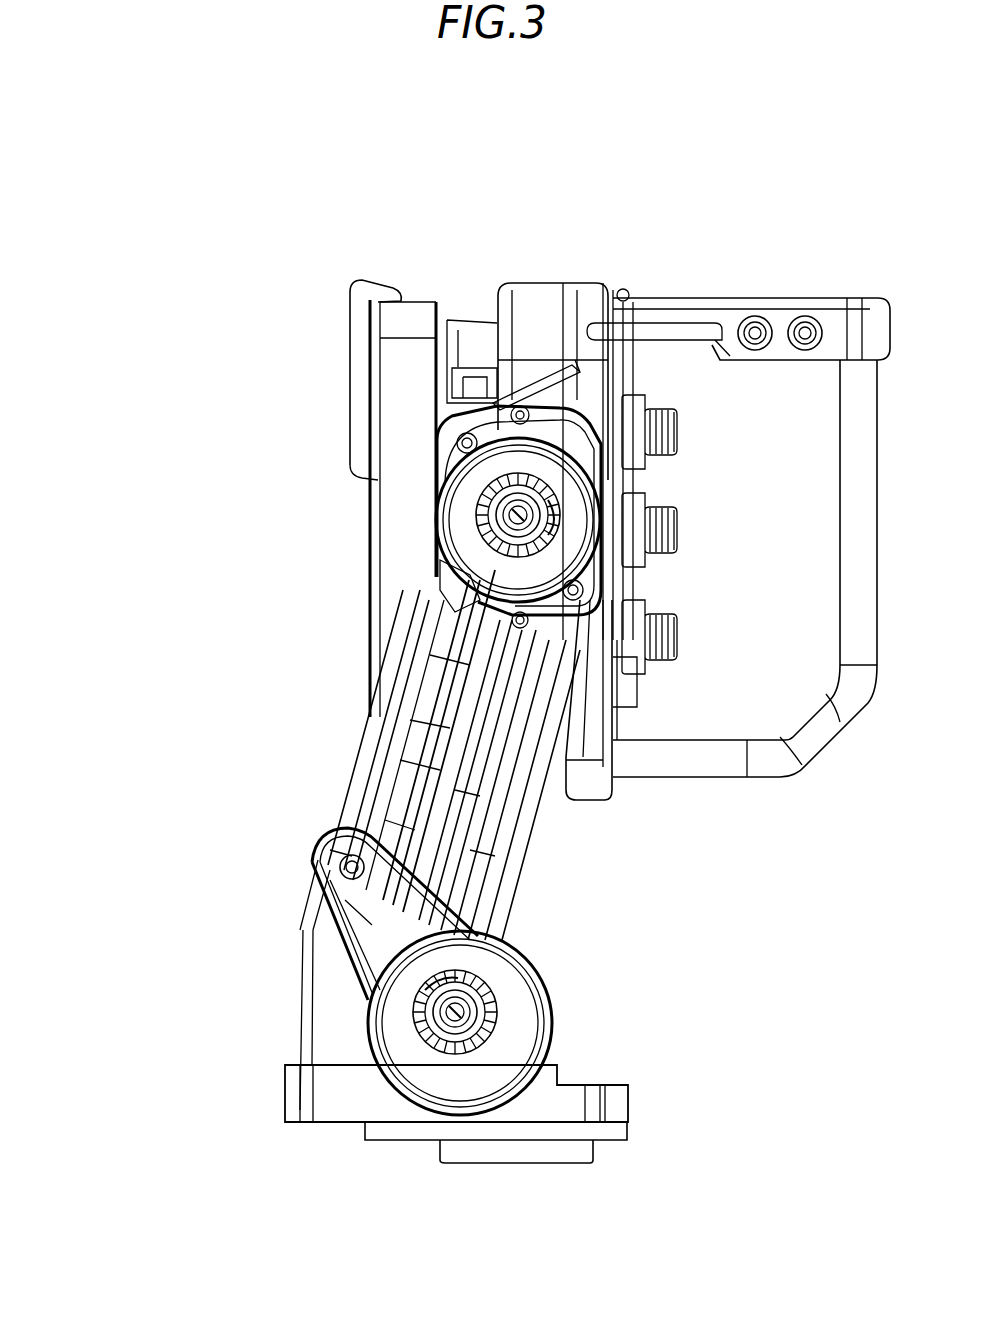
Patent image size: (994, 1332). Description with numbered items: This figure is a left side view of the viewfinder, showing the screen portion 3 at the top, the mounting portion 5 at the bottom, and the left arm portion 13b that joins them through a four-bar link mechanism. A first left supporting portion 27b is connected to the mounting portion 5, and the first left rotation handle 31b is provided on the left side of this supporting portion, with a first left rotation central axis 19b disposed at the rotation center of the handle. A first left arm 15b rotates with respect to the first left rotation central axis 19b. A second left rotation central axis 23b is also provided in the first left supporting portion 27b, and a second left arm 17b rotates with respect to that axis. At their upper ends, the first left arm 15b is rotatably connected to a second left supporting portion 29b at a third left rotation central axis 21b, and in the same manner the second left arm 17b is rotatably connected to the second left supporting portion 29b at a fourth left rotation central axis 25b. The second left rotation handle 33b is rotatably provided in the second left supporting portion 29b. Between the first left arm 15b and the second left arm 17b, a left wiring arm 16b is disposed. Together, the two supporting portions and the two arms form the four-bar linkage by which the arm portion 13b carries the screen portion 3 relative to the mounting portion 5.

The screen portion 3 is at (535, 335).
The mounting portion 5 is at (316, 1100).
The arm portion 13b is at (123, 388).
The first left arm 15b is at (520, 790).
The left wiring arm 16b is at (468, 658).
The second left arm 17b is at (385, 747).
The first left rotation central axis 19b is at (440, 1036).
The third left rotation central axis 21b is at (457, 567).
The second left rotation central axis 23b is at (335, 860).
The fourth left rotation central axis 25b is at (445, 432).
The first left supporting portion 27b is at (372, 928).
The second left supporting portion 29b is at (445, 455).
The first left rotation handle 31b is at (400, 984).
The second left rotation handle 33b is at (458, 514).